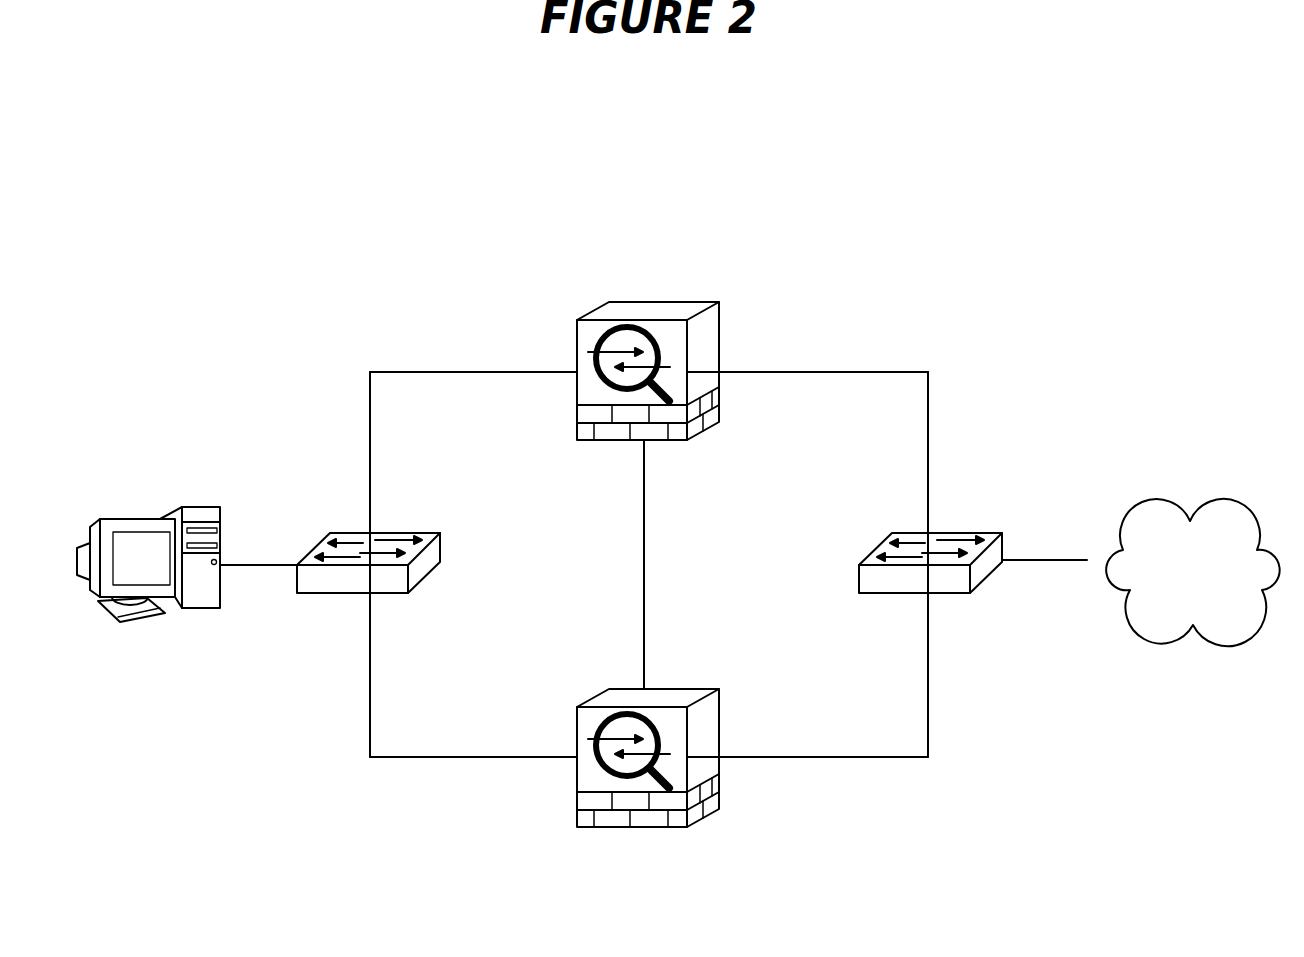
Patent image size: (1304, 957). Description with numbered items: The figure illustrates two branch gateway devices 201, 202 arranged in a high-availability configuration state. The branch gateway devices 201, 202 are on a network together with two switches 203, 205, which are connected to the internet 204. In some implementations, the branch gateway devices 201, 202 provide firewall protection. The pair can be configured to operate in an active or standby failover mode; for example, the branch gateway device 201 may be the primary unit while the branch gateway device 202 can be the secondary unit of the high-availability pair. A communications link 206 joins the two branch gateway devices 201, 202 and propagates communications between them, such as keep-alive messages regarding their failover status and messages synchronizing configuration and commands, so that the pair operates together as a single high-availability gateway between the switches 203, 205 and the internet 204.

The branch gateway device 201 is at (678, 302).
The branch gateway device 202 is at (678, 689).
The switch 203 is at (387, 533).
The internet 204 is at (1171, 576).
The switch 205 is at (950, 533).
The communications link 206 is at (644, 503).